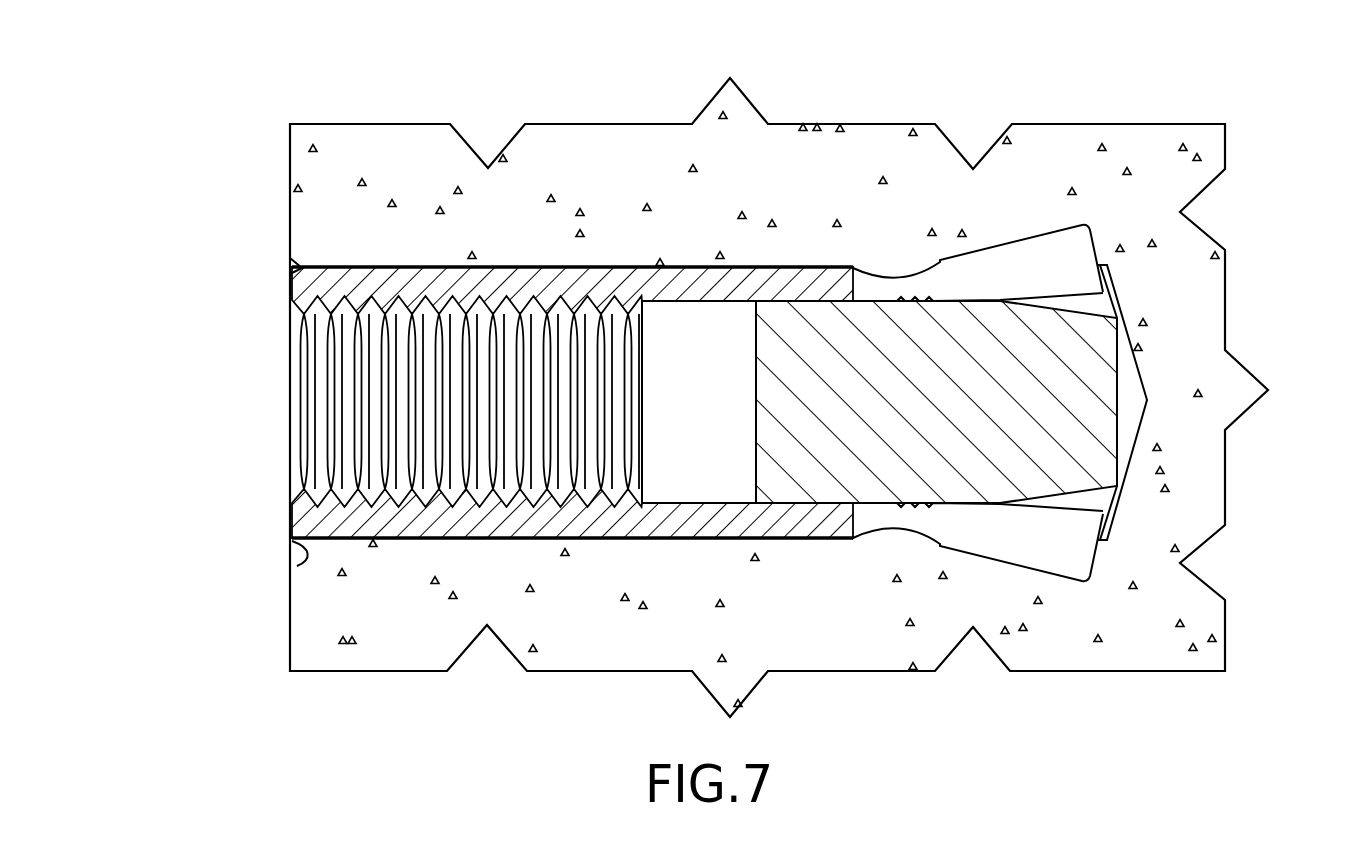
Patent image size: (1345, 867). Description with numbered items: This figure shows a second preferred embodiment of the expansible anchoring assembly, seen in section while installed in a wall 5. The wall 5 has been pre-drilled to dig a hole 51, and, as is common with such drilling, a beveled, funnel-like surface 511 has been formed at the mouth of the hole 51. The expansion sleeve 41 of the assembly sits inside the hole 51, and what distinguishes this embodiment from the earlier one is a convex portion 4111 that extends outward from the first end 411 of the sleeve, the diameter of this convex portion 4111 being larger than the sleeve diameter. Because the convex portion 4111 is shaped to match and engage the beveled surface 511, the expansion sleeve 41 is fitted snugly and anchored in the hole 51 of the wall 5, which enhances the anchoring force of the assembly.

The wall 5 is at (390, 612).
The expansion sleeve 41 is at (565, 269).
The first end 411 is at (292, 523).
The convex portion 4111 is at (290, 268).
The beveled surface 511 is at (303, 566).
The hole 51 is at (1128, 378).